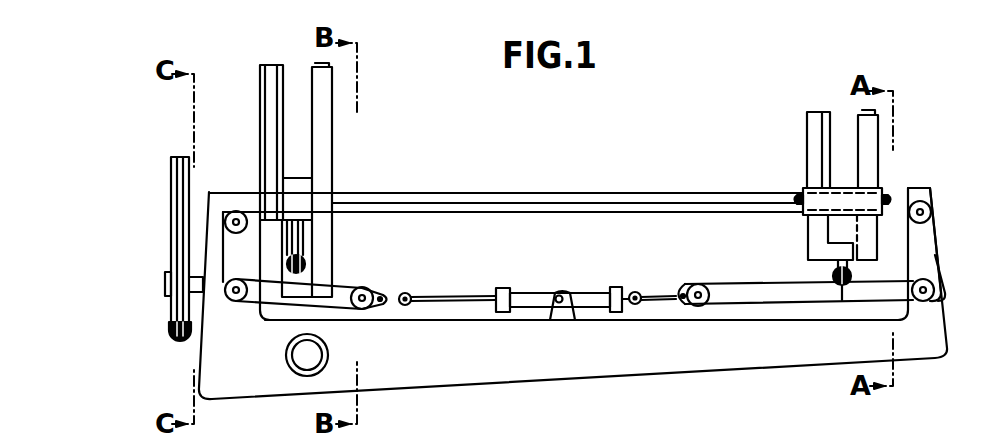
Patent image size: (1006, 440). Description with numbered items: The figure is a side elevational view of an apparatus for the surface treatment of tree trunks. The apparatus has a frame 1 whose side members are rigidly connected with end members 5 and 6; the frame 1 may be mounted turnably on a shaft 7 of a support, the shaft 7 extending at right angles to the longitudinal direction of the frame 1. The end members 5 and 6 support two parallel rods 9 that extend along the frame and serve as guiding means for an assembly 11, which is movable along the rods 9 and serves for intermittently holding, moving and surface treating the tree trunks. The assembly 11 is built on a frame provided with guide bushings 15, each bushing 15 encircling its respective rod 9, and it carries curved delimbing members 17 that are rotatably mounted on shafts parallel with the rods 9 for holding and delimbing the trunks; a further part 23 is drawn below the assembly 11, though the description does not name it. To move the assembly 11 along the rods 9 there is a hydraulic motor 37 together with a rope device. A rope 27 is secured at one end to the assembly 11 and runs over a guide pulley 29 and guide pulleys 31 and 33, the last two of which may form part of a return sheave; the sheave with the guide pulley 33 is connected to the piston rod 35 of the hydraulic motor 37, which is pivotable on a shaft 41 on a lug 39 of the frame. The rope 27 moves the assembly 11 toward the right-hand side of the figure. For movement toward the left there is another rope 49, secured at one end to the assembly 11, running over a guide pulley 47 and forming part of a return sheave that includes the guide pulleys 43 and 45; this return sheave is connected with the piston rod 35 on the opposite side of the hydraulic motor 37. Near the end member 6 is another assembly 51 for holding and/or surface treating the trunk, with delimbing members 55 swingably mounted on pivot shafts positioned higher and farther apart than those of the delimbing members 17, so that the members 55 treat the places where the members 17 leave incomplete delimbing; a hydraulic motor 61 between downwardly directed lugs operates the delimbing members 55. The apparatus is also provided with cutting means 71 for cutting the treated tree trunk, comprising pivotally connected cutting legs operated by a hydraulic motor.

The frame 1 is at (215, 399).
The end member 5 is at (925, 236).
The end member 6 is at (215, 241).
The shaft 7 is at (305, 362).
The rods 9 is at (650, 193).
The assembly 11 is at (808, 236).
The guide bushings 15 is at (862, 200).
The delimbing members 17 is at (818, 143).
The pin 23 is at (842, 300).
The rope 27 is at (943, 268).
The guide pulley 29 is at (931, 208).
The guide pulley 31 is at (934, 294).
The guide pulley 33 is at (705, 306).
The piston rod 35 is at (463, 300).
The hydraulic motor 37 is at (598, 300).
The lug 39 is at (568, 307).
The shaft 41 is at (557, 312).
The guide pulley 43 is at (366, 310).
The guide pulley 45 is at (230, 300).
The guide pulley 47 is at (237, 211).
The rope 49 is at (558, 193).
The assembly 51 is at (334, 247).
The delimbing members 55 is at (270, 88).
The hydraulic motor 61 is at (297, 274).
The cutting means 71 is at (170, 308).